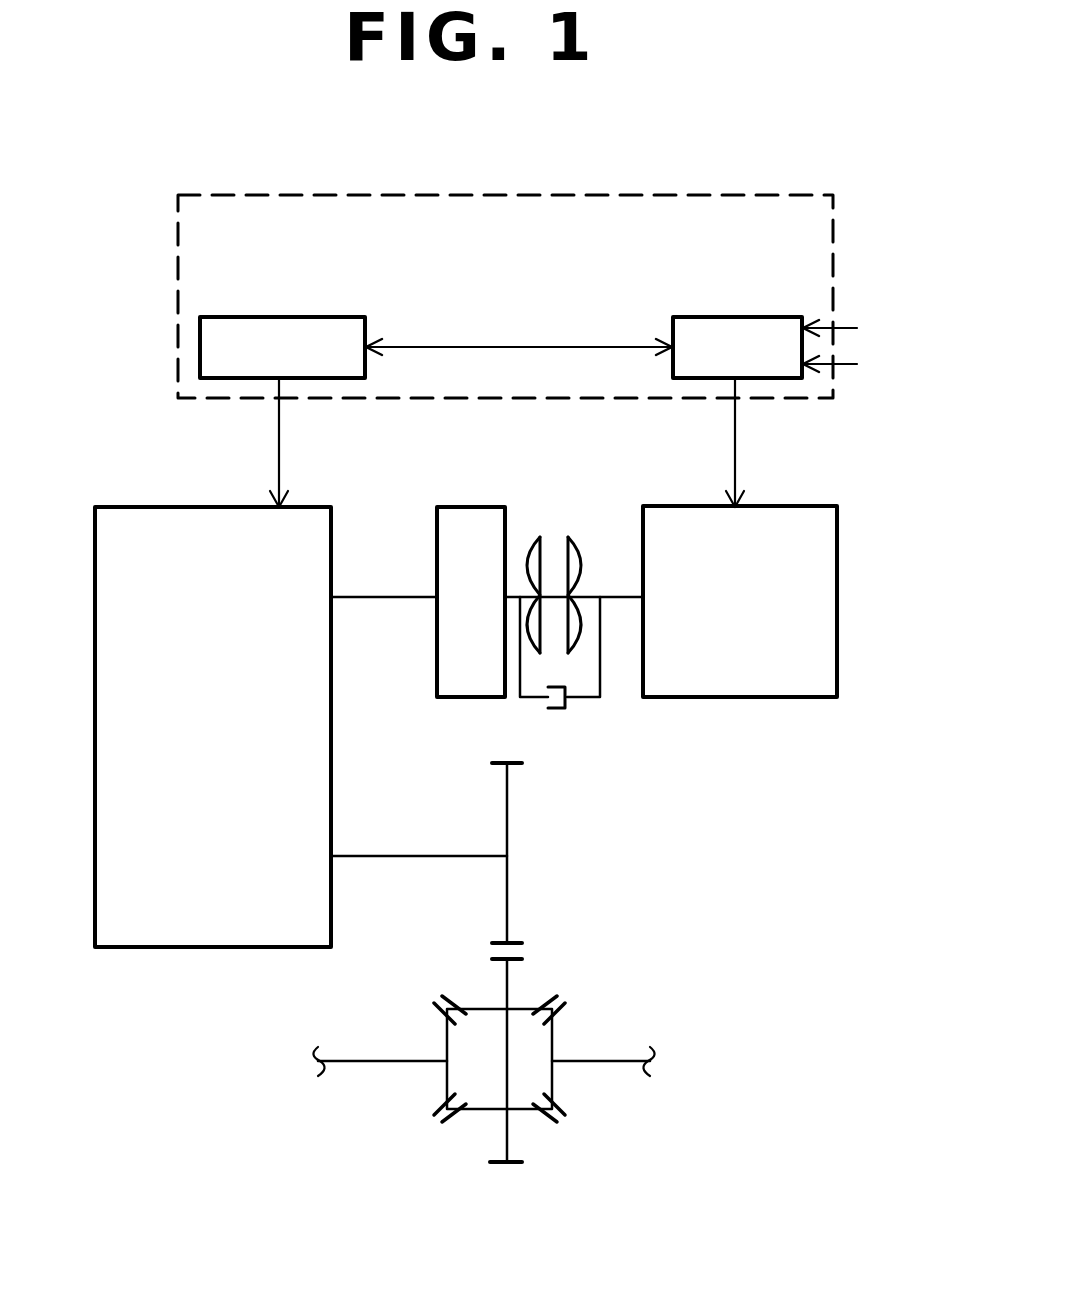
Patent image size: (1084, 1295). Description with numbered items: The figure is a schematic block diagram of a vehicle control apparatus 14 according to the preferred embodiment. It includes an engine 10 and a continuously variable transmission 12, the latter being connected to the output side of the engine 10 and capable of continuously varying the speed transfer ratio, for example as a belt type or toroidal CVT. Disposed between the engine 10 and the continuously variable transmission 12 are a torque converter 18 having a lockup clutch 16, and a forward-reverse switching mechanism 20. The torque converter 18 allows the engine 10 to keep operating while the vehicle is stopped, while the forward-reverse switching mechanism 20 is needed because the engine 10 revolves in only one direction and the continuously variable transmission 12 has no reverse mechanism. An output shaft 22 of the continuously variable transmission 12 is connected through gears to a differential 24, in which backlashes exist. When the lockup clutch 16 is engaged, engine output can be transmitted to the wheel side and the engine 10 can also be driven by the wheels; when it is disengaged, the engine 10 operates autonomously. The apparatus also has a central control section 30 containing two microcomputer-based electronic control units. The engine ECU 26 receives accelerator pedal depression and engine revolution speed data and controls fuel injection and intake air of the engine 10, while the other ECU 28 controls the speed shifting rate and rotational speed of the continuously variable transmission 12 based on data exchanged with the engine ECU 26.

The engine 10 is at (837, 622).
The continuously variable transmission 12 is at (331, 540).
The vehicle control apparatus 14 is at (866, 171).
The lockup clutch 16 is at (568, 701).
The torque converter 18 is at (555, 547).
The forward-reverse switching mechanism 20 is at (467, 507).
The output shaft 22 is at (412, 856).
The differential 24 is at (620, 976).
The engine ECU 26 is at (735, 317).
The ECU 28 is at (297, 317).
The central control section 30 is at (582, 196).